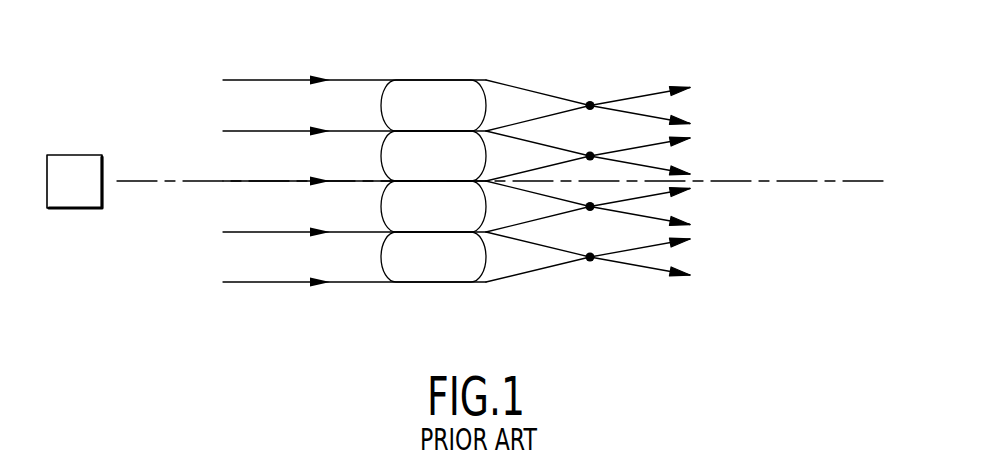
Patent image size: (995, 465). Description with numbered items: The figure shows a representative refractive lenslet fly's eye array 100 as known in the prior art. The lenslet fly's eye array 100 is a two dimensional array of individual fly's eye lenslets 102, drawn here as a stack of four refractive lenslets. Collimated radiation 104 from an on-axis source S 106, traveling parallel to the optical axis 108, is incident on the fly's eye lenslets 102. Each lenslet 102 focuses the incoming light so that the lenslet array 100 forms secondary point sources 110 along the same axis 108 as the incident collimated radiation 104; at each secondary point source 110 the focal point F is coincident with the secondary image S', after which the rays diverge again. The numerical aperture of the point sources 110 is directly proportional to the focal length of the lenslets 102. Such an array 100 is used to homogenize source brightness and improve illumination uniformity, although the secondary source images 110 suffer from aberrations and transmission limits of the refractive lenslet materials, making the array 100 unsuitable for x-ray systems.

The refractive lenslet fly's eye array 100 is at (605, 36).
The fly's eye lenslets 102 is at (437, 78).
The collimated radiation 104 is at (280, 78).
The on-axis source S 106 is at (80, 155).
The optical axis 108 is at (158, 181).
The secondary point sources 110 is at (590, 106).